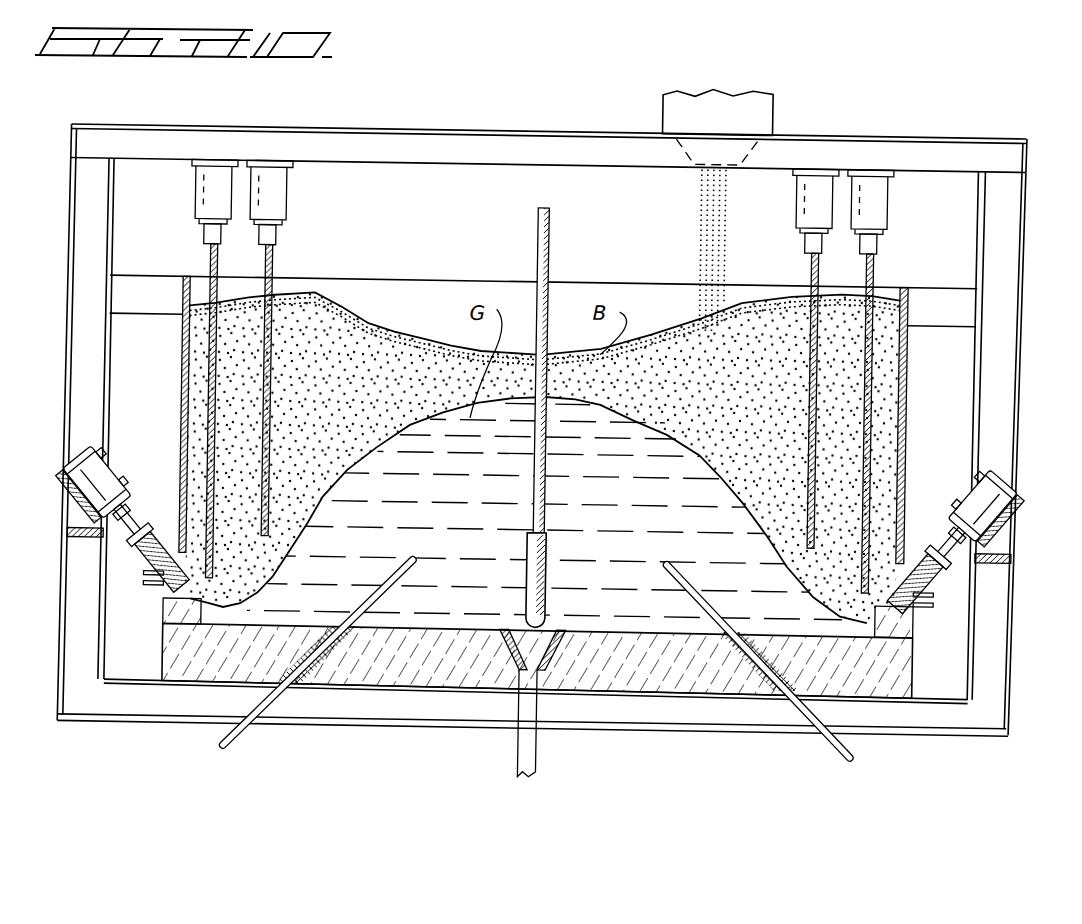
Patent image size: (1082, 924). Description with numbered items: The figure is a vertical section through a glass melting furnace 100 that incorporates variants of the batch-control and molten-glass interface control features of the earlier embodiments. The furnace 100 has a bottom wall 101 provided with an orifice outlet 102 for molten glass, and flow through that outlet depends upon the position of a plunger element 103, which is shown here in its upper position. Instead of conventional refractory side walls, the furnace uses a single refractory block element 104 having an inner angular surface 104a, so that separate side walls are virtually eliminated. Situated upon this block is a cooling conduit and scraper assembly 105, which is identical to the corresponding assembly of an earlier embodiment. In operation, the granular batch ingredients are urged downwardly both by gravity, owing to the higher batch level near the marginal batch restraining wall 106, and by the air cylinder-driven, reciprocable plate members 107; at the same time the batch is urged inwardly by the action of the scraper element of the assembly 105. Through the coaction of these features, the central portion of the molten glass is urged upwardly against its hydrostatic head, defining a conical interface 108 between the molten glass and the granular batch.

The glass melting furnace 100 is at (1030, 372).
The bottom wall 101 is at (667, 673).
The orifice outlet 102 is at (529, 690).
The plunger element 103 is at (537, 572).
The refractory block element 104 is at (213, 635).
The inner angular surface 104a is at (248, 620).
The cooling conduit and scraper assembly 105 is at (140, 576).
The marginal batch restraining wall 106 is at (181, 392).
The reciprocable plate members 107 is at (268, 262).
The conical interface 108 is at (706, 456).